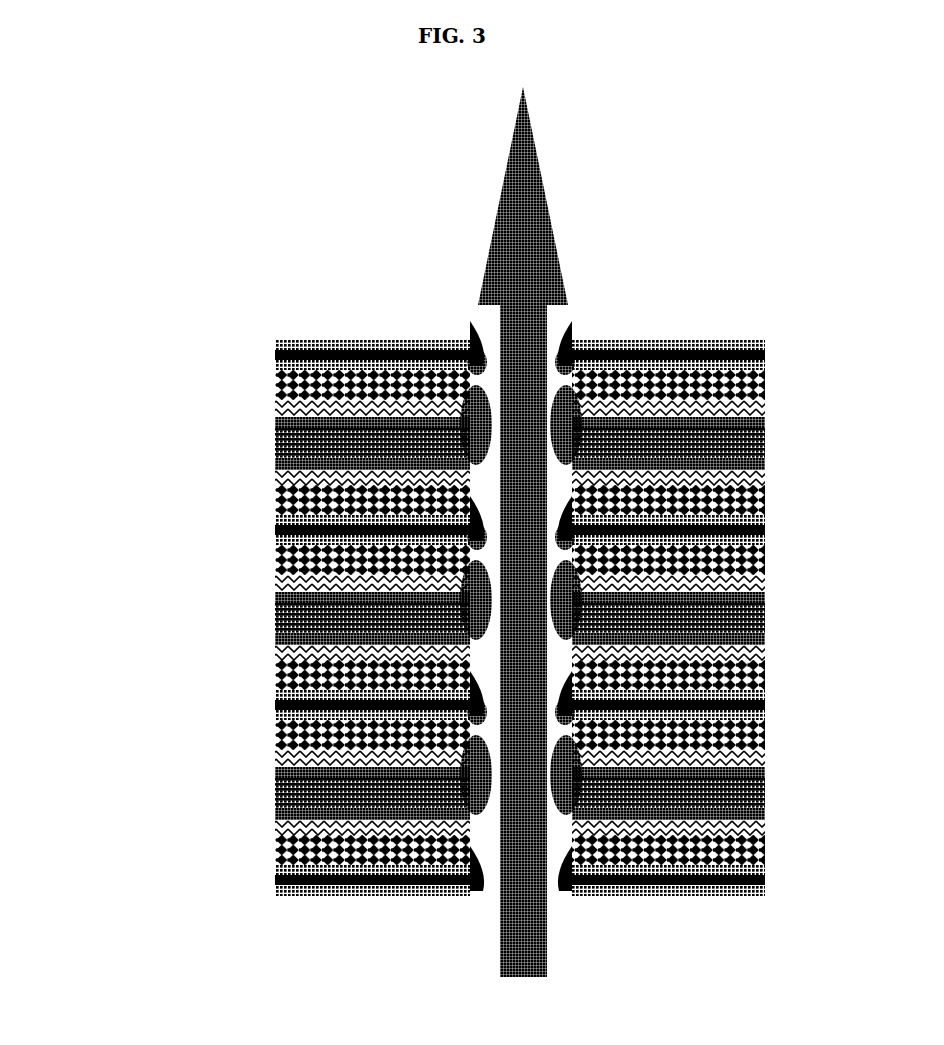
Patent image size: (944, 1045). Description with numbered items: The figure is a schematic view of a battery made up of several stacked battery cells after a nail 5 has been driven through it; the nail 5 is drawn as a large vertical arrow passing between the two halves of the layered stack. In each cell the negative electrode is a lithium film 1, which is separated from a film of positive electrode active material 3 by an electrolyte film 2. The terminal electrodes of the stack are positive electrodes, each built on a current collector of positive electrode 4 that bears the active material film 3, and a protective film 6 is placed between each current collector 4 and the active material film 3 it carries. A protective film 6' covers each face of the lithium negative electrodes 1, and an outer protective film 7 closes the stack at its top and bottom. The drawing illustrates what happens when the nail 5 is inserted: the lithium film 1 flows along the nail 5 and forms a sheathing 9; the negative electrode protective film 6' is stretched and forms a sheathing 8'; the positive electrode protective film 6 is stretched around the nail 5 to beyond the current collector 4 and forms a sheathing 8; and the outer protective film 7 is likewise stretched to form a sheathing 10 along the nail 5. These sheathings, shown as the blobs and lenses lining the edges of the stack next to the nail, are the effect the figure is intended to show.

The lithium film constituting a negative electrode 1 is at (770, 443).
The electrolyte film 2 is at (265, 413).
The film of positive electrode active material 3 is at (265, 392).
The current collector of positive electrode 4 is at (275, 351).
The nail 5 is at (490, 212).
The protective film for a positive electrode 6 is at (416, 614).
The protective film for a negative electrode 6' is at (566, 616).
The outer protective film 7 is at (380, 340).
The sheathing produced by stretching of a film 6 8 is at (660, 518).
The sheathing produced by stretching of a film 6' 8' is at (453, 572).
The sheathing produced by flow of a lithium film 1 9 is at (465, 580).
The sheathing formed by stretching of a film 7 10 is at (472, 888).